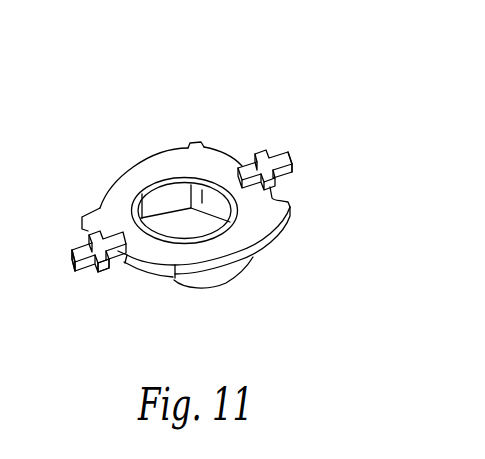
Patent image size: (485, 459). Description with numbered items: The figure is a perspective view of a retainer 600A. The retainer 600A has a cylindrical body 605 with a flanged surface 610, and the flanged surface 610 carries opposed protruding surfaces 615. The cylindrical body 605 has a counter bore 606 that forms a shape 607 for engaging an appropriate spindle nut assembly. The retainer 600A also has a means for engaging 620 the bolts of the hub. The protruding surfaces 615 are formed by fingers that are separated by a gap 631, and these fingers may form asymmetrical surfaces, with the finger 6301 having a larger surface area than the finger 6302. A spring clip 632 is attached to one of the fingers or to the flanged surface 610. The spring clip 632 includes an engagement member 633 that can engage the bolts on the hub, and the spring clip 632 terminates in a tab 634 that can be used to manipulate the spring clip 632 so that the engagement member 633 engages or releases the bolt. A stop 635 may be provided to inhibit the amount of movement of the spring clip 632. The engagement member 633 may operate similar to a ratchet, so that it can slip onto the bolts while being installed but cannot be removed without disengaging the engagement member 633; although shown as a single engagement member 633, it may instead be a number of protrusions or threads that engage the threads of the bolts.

The retainer 600A is at (317, 88).
The cylindrical body 605 is at (246, 262).
The counter bore 606 is at (188, 180).
The shape 607 is at (196, 185).
The flanged surface 610 is at (133, 168).
The protruding surfaces 615 is at (139, 267).
The means for engaging 620 is at (263, 151).
The finger 6301 is at (167, 270).
The finger 6302 is at (87, 207).
The gap 631 is at (259, 132).
The spring clip 632 is at (76, 259).
The engagement member 633 is at (106, 268).
The tab 634 is at (88, 272).
The stop 635 is at (295, 170).